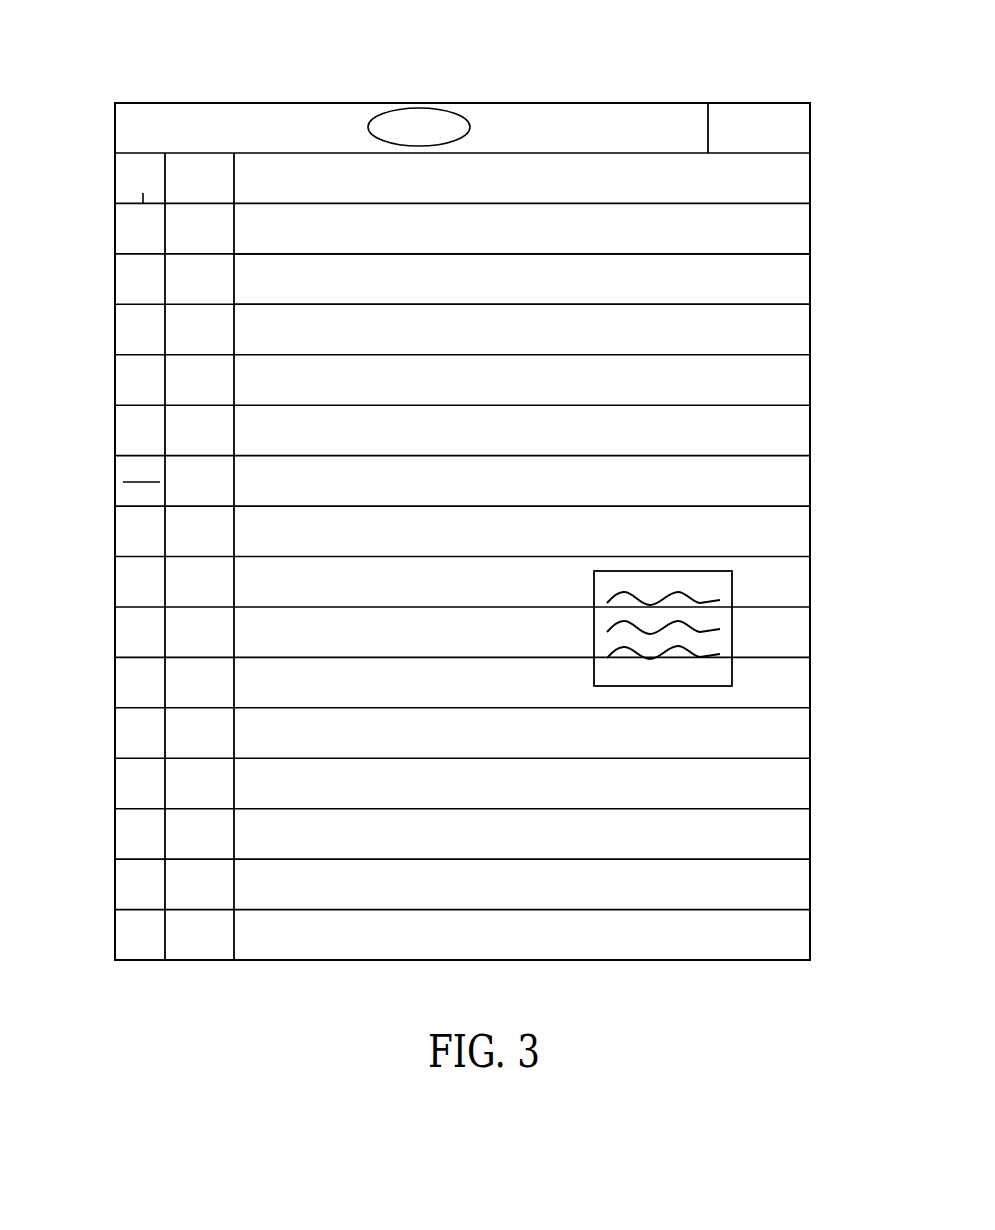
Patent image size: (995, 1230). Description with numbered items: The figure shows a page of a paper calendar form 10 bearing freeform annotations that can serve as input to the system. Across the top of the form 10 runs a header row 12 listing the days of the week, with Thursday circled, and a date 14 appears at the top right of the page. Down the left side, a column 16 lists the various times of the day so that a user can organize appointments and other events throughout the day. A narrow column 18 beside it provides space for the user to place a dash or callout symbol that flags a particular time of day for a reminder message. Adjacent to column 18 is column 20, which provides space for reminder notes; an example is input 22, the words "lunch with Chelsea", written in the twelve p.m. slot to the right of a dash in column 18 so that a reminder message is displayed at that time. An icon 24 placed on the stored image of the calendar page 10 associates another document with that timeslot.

The calendar form 10 is at (382, 63).
The day-of-week header row 12 is at (200, 117).
The date 14 is at (768, 105).
The column 16 is at (177, 180).
The column 18 is at (143, 196).
The column 20 is at (785, 278).
The input 22 is at (785, 482).
The icon 24 is at (732, 579).